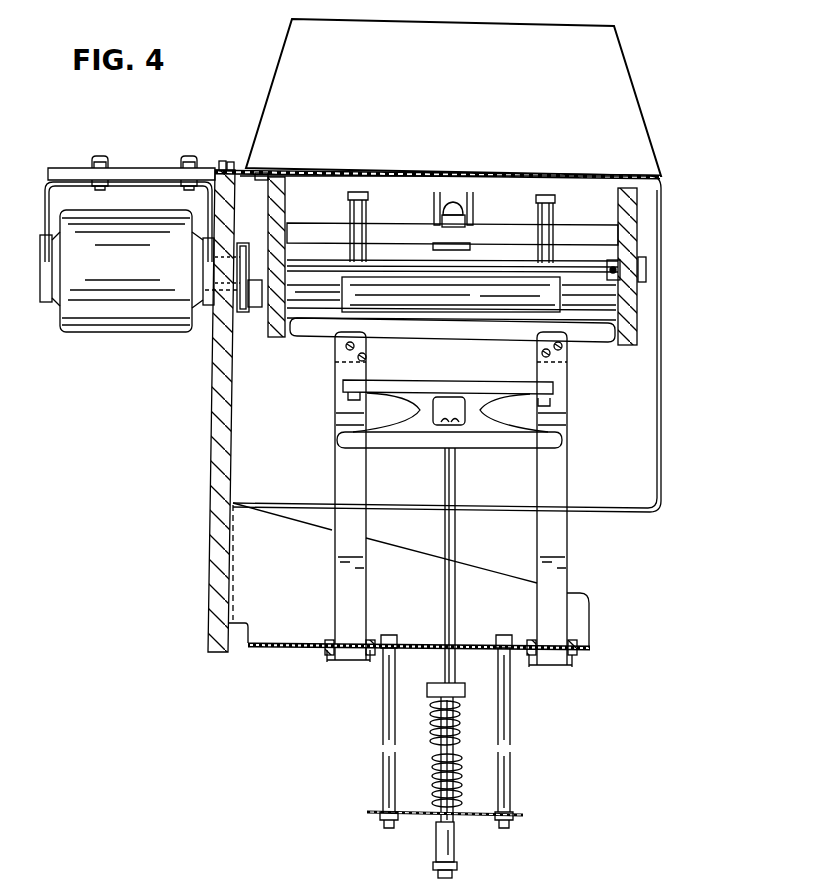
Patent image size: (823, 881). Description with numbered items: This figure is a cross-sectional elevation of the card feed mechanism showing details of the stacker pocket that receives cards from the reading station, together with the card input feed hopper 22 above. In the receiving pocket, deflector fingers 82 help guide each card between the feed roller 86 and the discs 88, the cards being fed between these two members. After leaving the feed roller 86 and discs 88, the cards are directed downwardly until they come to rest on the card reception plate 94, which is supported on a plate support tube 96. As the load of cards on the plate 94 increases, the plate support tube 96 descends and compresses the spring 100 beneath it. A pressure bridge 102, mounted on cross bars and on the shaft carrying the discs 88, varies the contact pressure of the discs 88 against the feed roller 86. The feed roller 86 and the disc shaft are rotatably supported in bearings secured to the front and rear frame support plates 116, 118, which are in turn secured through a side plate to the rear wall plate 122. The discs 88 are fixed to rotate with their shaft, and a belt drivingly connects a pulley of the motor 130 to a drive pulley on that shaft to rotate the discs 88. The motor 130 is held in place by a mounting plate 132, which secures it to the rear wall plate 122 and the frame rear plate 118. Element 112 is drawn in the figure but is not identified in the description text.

The card input feed hopper 22 is at (612, 71).
The deflector fingers 82 is at (445, 275).
The feed roller 86 is at (523, 295).
The discs 88 is at (552, 207).
The card reception plate 94 is at (475, 449).
The plate support tube 96 is at (447, 580).
The spring 100 is at (433, 767).
The pressure bridge 102 is at (468, 207).
The side panel 112 is at (660, 404).
The front frame support plate 116 is at (633, 238).
The rear frame support plate 118 is at (274, 340).
The rear wall plate 122 is at (212, 504).
The motor 130 is at (95, 326).
The mounting plate 132 is at (157, 175).